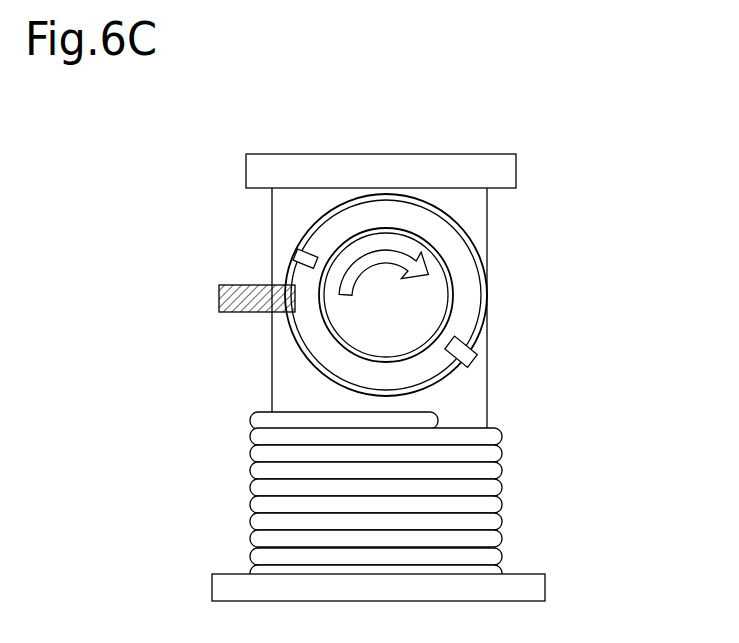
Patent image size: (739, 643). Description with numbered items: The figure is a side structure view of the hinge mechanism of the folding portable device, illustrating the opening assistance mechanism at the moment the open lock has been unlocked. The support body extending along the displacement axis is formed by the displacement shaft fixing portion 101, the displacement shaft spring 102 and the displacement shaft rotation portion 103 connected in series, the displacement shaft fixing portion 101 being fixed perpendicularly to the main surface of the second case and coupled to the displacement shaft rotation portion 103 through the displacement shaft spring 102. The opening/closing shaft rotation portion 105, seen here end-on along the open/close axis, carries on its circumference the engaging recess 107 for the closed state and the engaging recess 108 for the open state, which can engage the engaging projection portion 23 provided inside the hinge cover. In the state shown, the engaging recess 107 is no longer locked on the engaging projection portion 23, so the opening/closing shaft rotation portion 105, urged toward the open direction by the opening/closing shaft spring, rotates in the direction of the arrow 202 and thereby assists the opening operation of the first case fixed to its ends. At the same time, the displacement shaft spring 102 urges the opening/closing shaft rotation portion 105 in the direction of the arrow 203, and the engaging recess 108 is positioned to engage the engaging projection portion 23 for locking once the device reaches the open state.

The engaging projection portion 23 is at (219, 301).
The displacement shaft fixing portion 101 is at (537, 588).
The displacement shaft spring 102 is at (502, 493).
The displacement shaft rotation portion 103 is at (473, 405).
The opening/closing shaft rotation portion 105 is at (465, 290).
The engaging recess for closed state 107 is at (312, 227).
The engaging recess for open state 108 is at (463, 357).
The arrow 202 is at (375, 228).
The arrow 203 is at (297, 263).